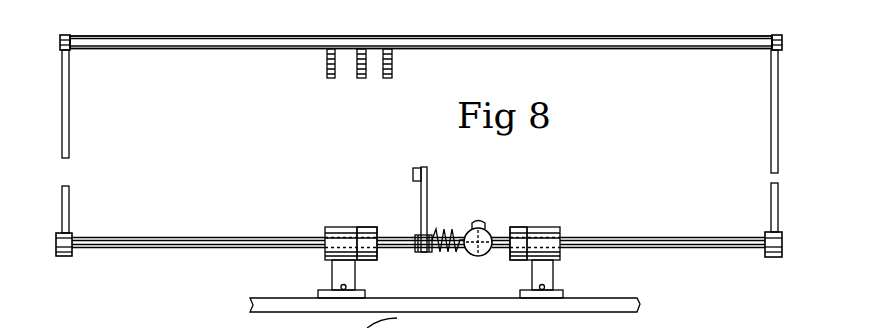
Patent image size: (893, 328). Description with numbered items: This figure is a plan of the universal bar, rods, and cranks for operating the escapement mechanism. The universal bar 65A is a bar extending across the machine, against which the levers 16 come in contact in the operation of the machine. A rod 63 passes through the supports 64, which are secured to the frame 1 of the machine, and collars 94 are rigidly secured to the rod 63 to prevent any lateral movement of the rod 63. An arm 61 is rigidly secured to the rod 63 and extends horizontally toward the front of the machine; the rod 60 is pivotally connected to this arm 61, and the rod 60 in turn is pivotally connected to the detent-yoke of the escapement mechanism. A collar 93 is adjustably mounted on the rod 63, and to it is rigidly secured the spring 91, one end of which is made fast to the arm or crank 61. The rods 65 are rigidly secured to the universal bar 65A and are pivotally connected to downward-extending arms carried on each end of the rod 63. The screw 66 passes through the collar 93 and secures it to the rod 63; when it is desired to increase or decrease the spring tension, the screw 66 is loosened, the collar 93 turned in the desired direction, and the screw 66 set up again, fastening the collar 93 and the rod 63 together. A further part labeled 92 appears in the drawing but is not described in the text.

The frame 1 is at (431, 300).
The levers 16 is at (327, 70).
The rod 60 is at (418, 167).
The arm 61 is at (428, 193).
The rod 63 is at (158, 237).
The supports 64 is at (340, 254).
The rods 65 is at (69, 113).
The universal bar 65A is at (449, 44).
The screw 66 is at (490, 232).
The spring 91 is at (438, 228).
The clamp collar 92 is at (421, 226).
The collar 93 is at (480, 222).
The collars 94 is at (374, 258).